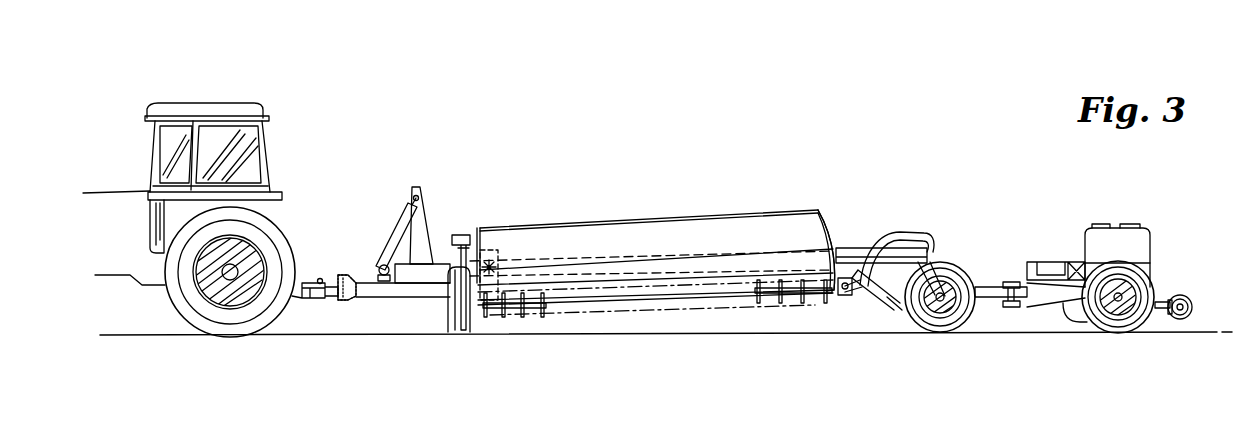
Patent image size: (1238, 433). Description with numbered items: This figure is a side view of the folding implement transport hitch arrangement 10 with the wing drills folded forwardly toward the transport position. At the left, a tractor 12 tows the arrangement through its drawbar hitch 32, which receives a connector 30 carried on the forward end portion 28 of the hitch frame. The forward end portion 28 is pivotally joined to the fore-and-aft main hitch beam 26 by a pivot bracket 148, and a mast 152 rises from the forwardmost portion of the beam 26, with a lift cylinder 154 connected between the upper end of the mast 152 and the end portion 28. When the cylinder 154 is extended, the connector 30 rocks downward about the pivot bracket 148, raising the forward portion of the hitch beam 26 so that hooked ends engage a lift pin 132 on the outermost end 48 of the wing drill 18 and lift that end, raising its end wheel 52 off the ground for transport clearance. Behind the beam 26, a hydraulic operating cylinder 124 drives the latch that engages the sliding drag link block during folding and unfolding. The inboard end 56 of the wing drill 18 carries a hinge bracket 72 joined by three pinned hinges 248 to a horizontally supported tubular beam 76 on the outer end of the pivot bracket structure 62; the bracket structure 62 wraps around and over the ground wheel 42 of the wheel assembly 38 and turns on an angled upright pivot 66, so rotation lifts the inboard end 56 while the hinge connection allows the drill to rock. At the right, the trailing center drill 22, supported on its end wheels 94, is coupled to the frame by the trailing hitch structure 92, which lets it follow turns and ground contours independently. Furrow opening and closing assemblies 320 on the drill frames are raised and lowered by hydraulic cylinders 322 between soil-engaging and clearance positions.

The folding implement transport hitch arrangement 10 is at (876, 125).
The tractor 12 is at (304, 133).
The left wing implement 18 is at (677, 207).
The center trailing implement 22 is at (1123, 210).
The main hitch beam 26 is at (535, 258).
The forward end portion 28 is at (363, 290).
The connector 30 is at (347, 275).
The drawbar hitch 32 is at (297, 303).
The wheel assembly 38 is at (937, 336).
The ground wheel 42 is at (965, 312).
The outermost end 48 is at (481, 235).
The end wheel 52 is at (459, 316).
The inboard end 56 is at (833, 225).
The pivot bracket structure 62 is at (890, 225).
The upright pivot 66 is at (933, 237).
The hinge bracket 72 is at (840, 290).
The tubular beam 76 is at (855, 305).
The trailing hitch structure 92 is at (1003, 266).
The end wheels 94 is at (1123, 330).
The hydraulic operating cylinder 124 is at (848, 247).
The lift pin 132 is at (453, 238).
The pivot bracket 148 is at (490, 306).
The mast 152 is at (418, 218).
The lift cylinder 154 is at (390, 235).
The pinned hinges 248 is at (845, 293).
The furrow opening and closing assemblies 320 is at (757, 306).
The hydraulic cylinders 322 is at (1050, 262).